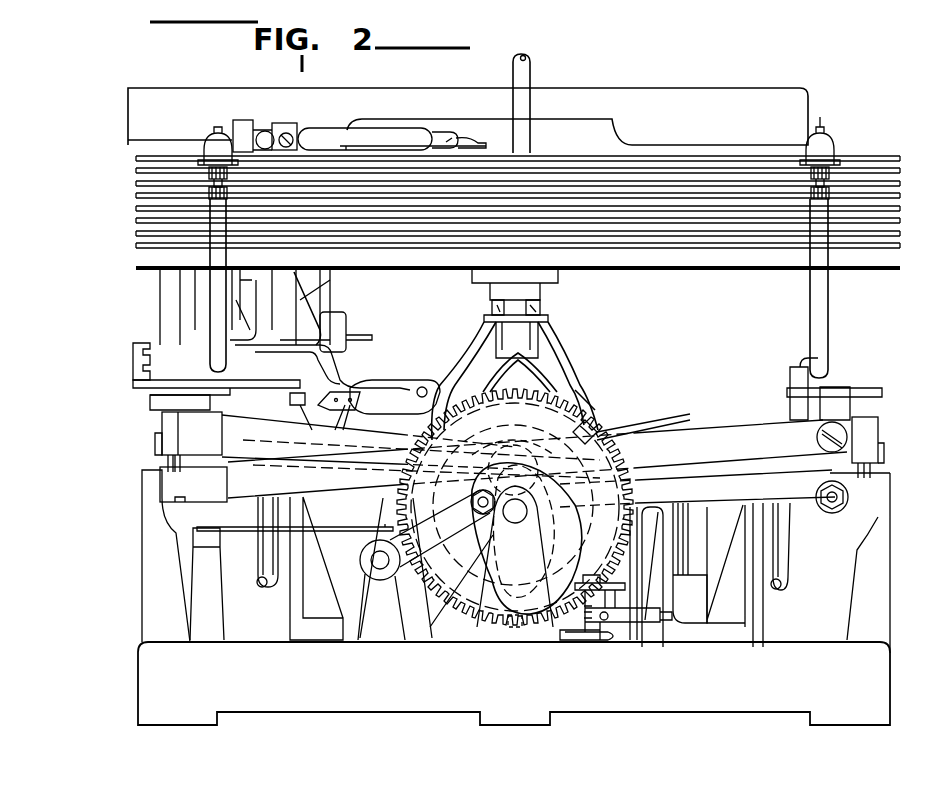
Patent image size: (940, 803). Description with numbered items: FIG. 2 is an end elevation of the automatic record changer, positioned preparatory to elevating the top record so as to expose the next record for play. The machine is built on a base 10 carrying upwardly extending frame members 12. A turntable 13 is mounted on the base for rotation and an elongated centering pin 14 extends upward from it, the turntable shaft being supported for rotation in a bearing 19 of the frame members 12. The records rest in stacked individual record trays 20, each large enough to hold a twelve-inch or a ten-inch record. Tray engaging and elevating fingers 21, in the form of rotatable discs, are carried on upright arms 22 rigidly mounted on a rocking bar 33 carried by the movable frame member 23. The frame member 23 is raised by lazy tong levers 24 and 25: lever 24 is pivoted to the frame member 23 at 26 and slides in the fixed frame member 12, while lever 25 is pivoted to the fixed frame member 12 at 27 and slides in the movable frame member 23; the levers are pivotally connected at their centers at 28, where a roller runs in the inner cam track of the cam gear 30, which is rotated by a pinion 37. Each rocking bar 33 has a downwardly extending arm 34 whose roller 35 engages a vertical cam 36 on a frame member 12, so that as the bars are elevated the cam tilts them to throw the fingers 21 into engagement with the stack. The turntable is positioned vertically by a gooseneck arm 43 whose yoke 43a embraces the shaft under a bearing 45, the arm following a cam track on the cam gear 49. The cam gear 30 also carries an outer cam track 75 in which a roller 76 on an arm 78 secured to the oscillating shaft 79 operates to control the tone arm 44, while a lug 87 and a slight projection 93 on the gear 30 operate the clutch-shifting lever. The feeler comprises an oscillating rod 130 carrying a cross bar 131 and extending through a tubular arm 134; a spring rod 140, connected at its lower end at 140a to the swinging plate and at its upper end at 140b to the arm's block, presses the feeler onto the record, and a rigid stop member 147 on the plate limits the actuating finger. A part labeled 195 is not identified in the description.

The base 10 is at (667, 712).
The frame members 12 is at (516, 560).
The turntable 13 is at (690, 266).
The centering pin 14 is at (527, 78).
The bearing 19 is at (530, 342).
The record trays 20 is at (866, 160).
The tray engaging and elevating fingers 21 is at (210, 160).
The upright arms 22 is at (215, 282).
The movable frame members 23 is at (176, 422).
The lazy tong lever 24 is at (736, 430).
The lazy tong lever 25 is at (724, 488).
The pivot 26 is at (817, 433).
The pivot 27 is at (835, 510).
The central pivotal connection 28 is at (513, 451).
The cam gear 30 is at (448, 618).
The rocking bar 33 is at (185, 392).
The downwardly extending arm 34 is at (248, 512).
The roller 35 is at (262, 587).
The cam 36 is at (262, 555).
The pinion 37 is at (585, 614).
The arm 43 is at (570, 356).
The yoke 43a is at (490, 310).
The tone arm 44 is at (388, 100).
The bearing 45 is at (545, 296).
The cam gear 49 is at (594, 396).
The outer cam track 75 is at (482, 533).
The roller 76 is at (527, 545).
The arm 78 is at (501, 505).
The shaft 79 is at (378, 572).
The lug 87 is at (514, 630).
The projection 93 is at (600, 428).
The oscillating rod 130 is at (441, 130).
The cross bar 131 is at (479, 140).
The tubular arm 134 is at (332, 136).
The spring rod 140 is at (312, 302).
The lower connection of spring rod 140a is at (330, 376).
The upper connection of spring rod 140b is at (272, 130).
The rigid stop member 147 is at (272, 416).
The bracket 195 is at (332, 412).